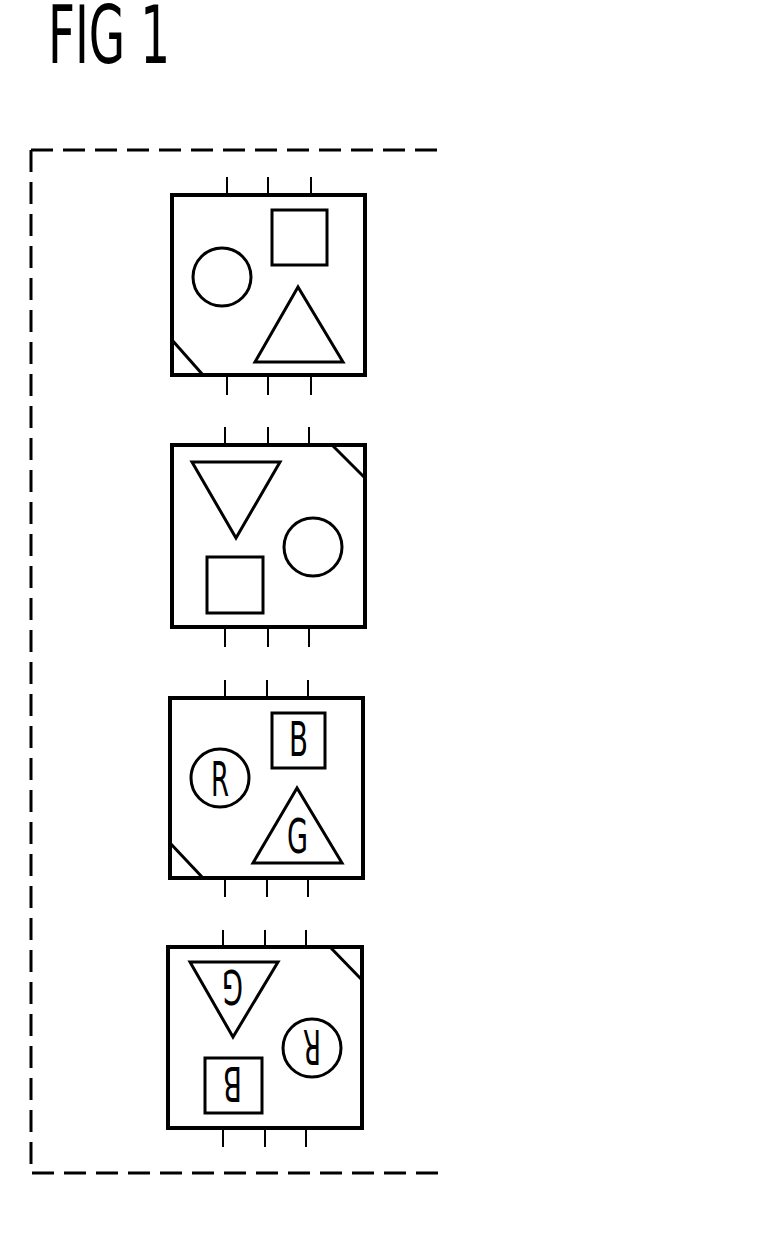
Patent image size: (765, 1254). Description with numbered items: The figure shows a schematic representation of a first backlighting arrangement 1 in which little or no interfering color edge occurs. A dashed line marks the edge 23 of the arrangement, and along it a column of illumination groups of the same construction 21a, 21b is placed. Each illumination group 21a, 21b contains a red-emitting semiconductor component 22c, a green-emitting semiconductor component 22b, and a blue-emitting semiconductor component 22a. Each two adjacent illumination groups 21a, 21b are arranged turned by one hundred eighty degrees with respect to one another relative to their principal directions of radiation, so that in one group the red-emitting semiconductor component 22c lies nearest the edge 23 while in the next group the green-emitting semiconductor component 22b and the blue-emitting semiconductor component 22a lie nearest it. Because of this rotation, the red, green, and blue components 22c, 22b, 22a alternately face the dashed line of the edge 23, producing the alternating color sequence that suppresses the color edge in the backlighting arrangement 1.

The backlighting arrangement 1 is at (560, 152).
The illumination group 21a is at (282, 286).
The illumination group 21b is at (289, 537).
The blue-emitting semiconductor component 22a is at (207, 583).
The green-emitting semiconductor component 22b is at (215, 502).
The red-emitting semiconductor component 22c is at (193, 277).
The edge 23 is at (340, 150).